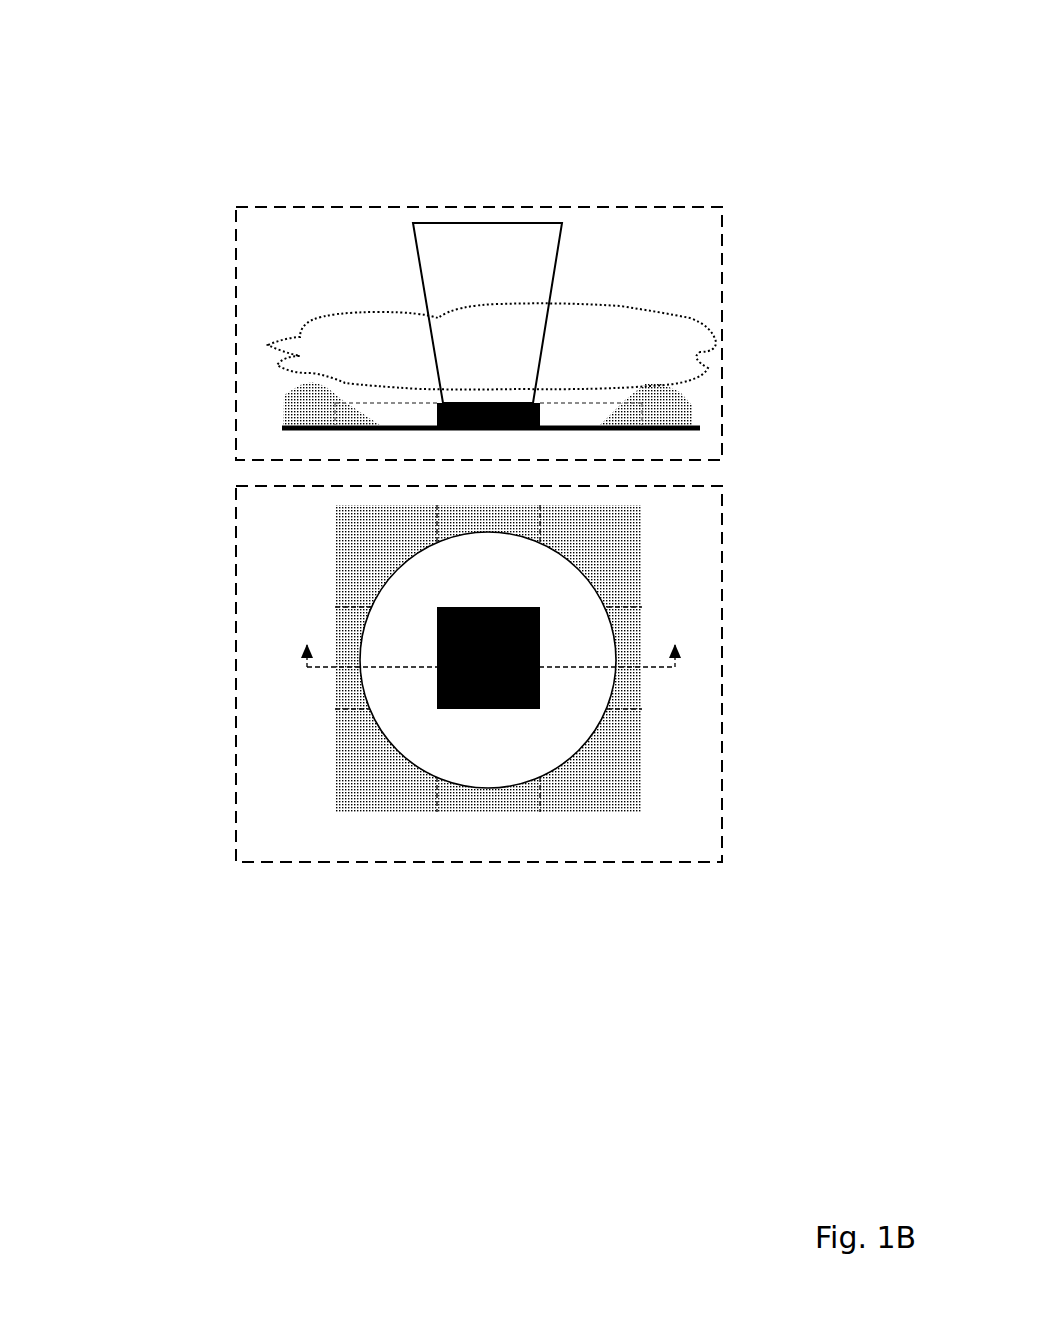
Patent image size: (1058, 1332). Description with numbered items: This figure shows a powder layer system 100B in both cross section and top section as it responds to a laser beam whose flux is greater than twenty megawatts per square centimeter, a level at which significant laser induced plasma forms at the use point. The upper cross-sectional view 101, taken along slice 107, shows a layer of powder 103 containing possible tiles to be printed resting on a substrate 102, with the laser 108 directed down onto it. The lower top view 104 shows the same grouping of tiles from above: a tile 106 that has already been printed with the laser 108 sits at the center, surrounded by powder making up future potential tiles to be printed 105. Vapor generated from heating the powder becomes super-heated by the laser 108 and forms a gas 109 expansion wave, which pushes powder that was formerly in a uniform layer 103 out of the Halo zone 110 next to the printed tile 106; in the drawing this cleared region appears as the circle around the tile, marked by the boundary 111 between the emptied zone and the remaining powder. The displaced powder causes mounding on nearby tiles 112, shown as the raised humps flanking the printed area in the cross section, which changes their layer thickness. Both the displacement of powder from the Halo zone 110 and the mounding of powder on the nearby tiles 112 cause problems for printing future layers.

The powder layer system 100B is at (750, 68).
The cross-sectional view 101 is at (233, 392).
The substrate 102 is at (700, 430).
The layer of powder 103 is at (645, 405).
The top view 104 is at (233, 672).
The future potential tiles to be printed 105 is at (372, 575).
The tile 106 is at (525, 718).
The slice 107 is at (690, 670).
The laser 108 is at (567, 262).
The gas 109 is at (677, 312).
The Halo zone 110 is at (591, 422).
The gas coverage boundary 111 is at (602, 727).
The nearby tiles 112 is at (315, 395).